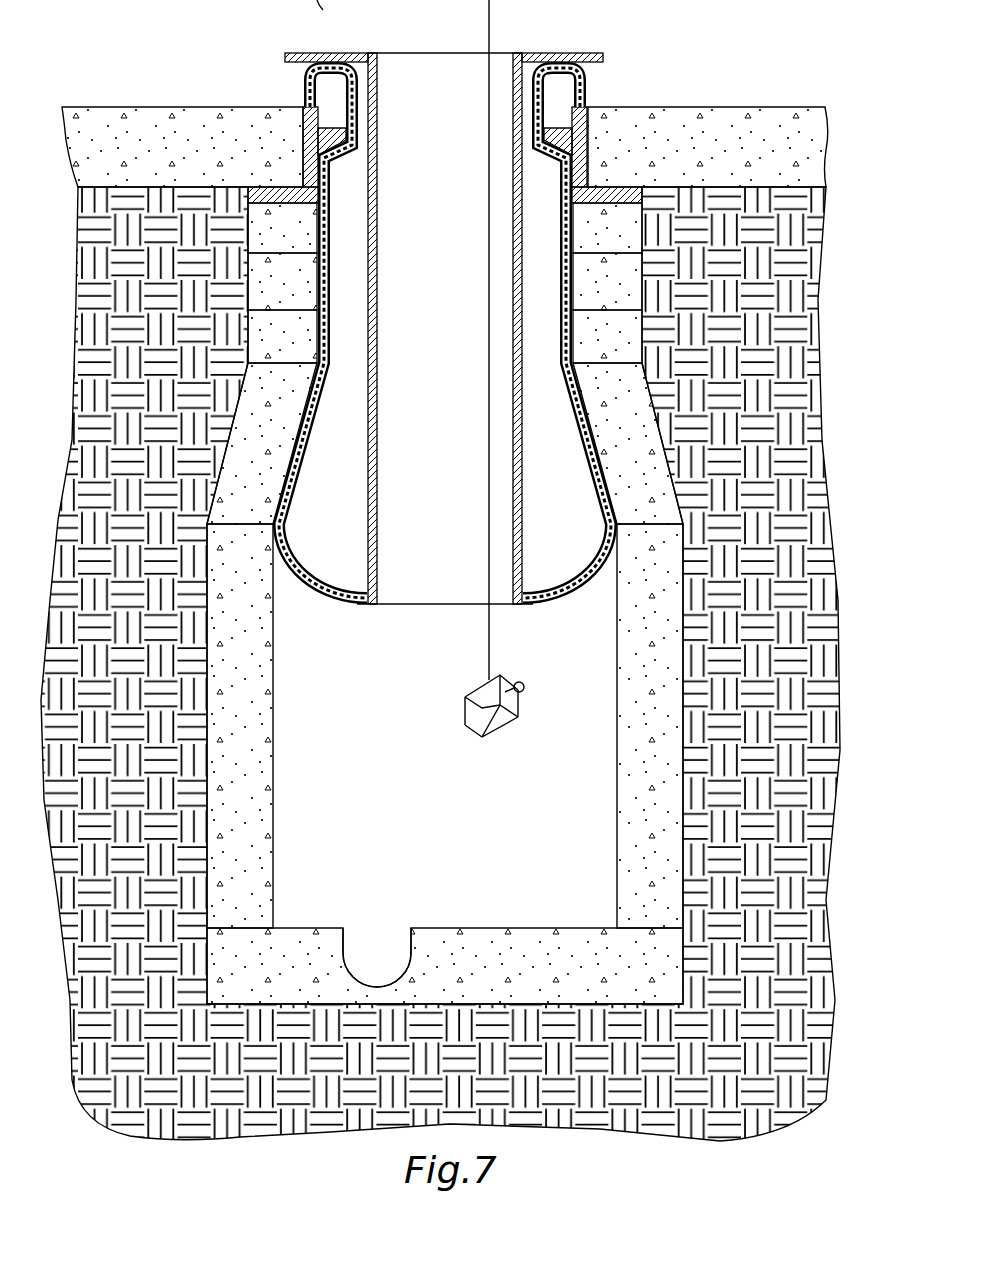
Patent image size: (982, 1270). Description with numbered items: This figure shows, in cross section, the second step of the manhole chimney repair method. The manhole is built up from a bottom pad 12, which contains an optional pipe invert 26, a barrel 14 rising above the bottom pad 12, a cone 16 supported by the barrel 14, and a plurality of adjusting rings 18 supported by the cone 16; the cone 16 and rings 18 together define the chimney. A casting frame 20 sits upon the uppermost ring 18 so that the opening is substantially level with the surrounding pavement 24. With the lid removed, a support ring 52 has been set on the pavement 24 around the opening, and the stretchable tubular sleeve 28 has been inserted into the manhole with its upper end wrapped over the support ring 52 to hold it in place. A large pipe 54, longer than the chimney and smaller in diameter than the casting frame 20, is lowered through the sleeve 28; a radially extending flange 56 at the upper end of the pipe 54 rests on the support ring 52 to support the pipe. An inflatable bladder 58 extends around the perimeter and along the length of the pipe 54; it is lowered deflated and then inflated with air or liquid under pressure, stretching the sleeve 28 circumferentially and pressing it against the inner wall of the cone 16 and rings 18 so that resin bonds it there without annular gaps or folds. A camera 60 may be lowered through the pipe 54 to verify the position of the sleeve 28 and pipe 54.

The bottom pad 12 is at (556, 941).
The barrel 14 is at (270, 716).
The cone 16 is at (273, 485).
The adjusting rings 18 is at (302, 231).
The casting frame 20 is at (306, 122).
The pavement 24 is at (153, 110).
The pipe invert 26 is at (377, 986).
The tubular sleeve 28 is at (300, 463).
The support ring 52 is at (566, 90).
The pipe 54 is at (421, 605).
The radially extending flange 56 is at (292, 52).
The inflatable bladder 58 is at (336, 600).
The camera 60 is at (480, 698).